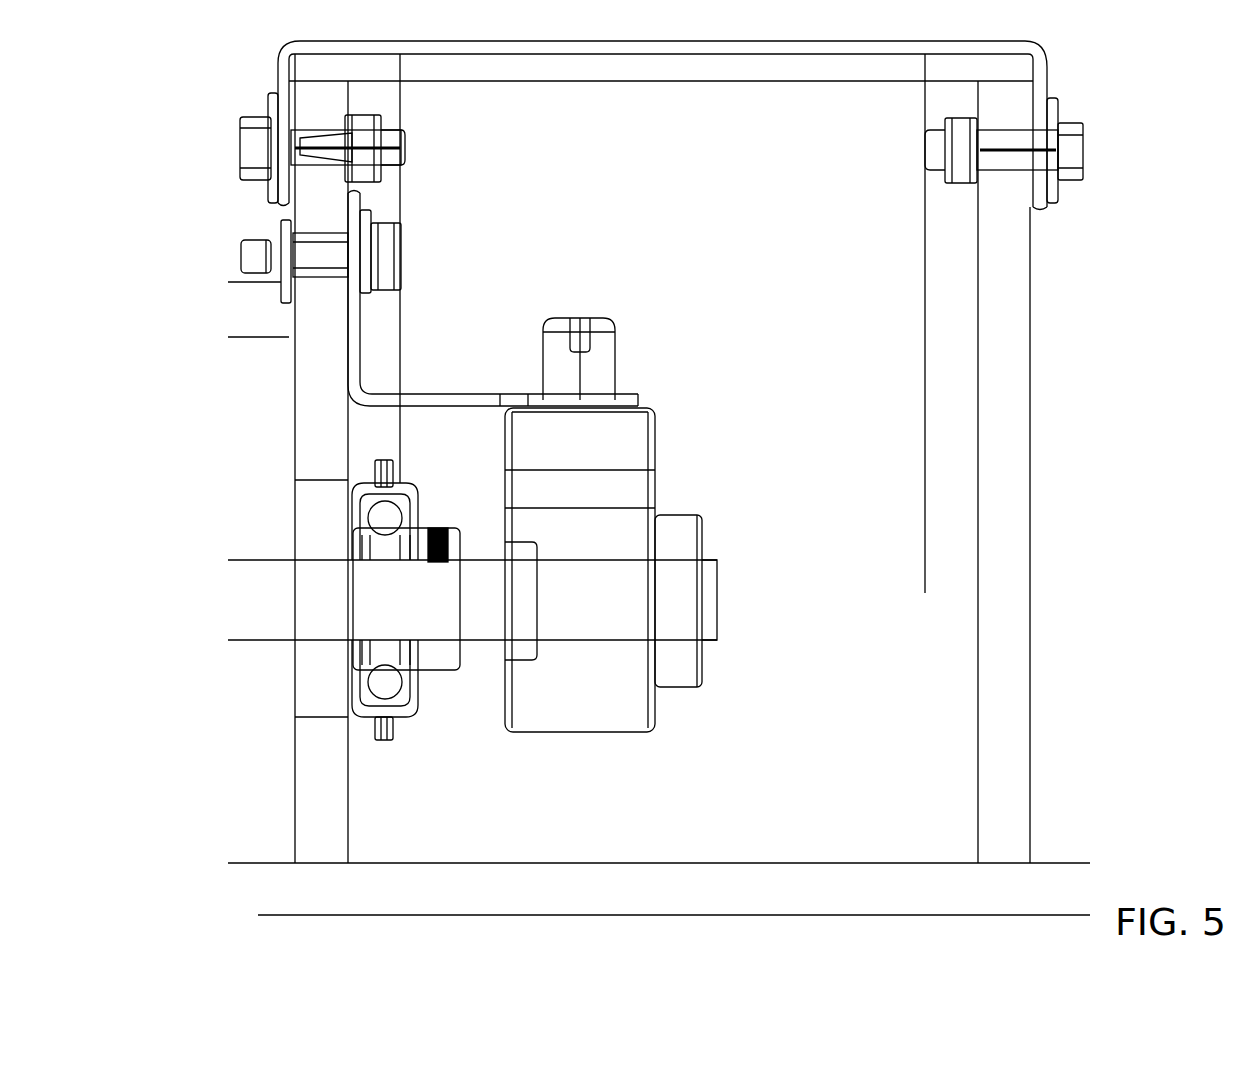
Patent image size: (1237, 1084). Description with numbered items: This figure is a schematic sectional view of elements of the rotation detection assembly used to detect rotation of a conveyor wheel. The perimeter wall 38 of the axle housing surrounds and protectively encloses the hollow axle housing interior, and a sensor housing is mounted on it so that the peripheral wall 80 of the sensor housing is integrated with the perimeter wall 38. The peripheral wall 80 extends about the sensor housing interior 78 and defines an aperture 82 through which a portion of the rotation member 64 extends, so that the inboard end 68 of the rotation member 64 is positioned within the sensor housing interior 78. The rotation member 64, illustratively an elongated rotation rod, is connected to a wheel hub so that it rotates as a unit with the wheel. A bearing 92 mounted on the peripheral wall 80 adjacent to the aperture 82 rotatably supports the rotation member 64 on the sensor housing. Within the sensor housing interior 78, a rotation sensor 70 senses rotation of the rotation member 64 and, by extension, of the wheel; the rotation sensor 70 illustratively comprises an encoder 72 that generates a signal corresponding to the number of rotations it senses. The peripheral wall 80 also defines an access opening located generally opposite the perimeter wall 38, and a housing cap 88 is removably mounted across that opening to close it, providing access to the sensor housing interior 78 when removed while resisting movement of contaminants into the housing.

The perimeter wall 38 is at (257, 318).
The rotation member 64 is at (257, 628).
The inboard end 68 is at (718, 582).
The rotation sensor 70 is at (673, 718).
The encoder 72 is at (577, 733).
The sensor housing interior 78 is at (890, 443).
The peripheral wall 80 is at (1005, 250).
The aperture 82 is at (323, 717).
The housing cap 88 is at (1050, 82).
The bearing 92 is at (363, 713).